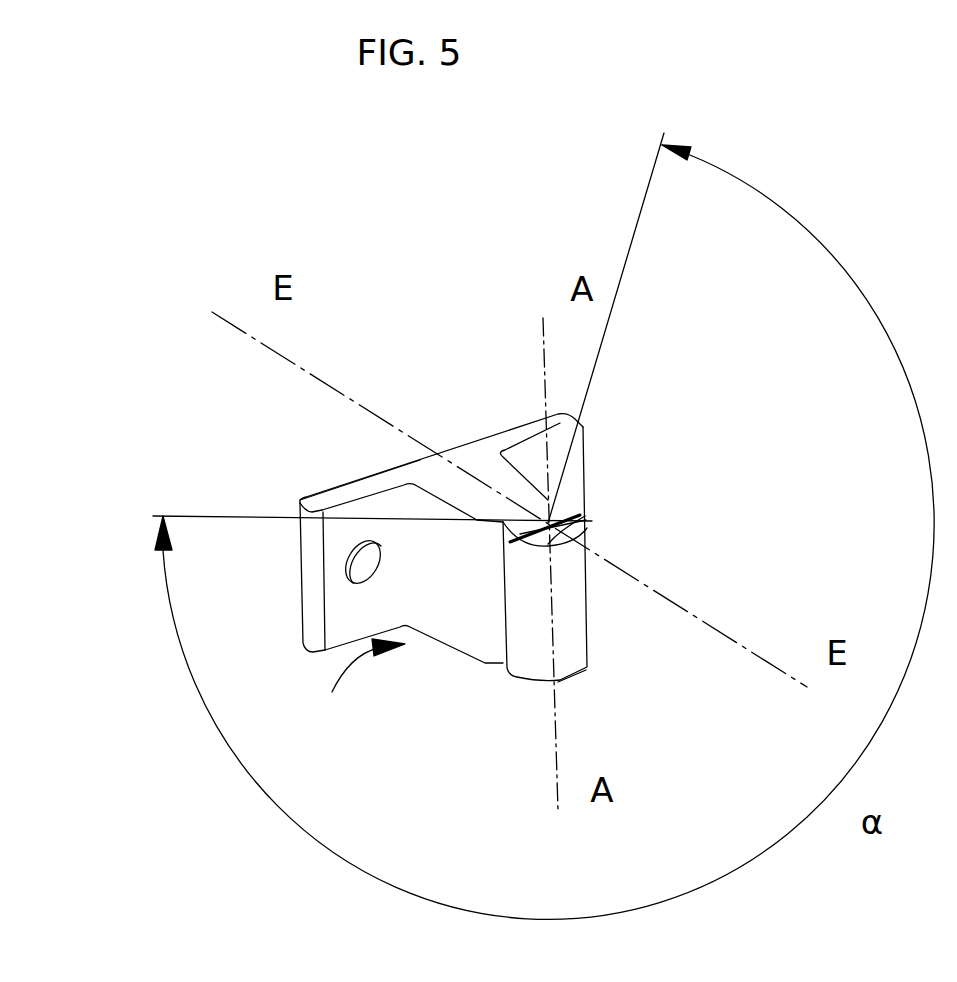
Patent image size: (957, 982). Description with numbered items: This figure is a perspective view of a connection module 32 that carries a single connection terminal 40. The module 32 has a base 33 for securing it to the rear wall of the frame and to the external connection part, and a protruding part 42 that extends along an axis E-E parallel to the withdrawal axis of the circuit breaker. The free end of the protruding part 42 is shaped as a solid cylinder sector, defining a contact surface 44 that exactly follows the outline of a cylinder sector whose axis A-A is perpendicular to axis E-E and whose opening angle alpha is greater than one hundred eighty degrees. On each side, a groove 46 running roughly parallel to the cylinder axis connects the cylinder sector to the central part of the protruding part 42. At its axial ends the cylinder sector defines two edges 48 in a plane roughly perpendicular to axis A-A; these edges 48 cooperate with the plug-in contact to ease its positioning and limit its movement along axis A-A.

The connection module 32 is at (502, 547).
The base 33 is at (358, 490).
The connection terminal 40 is at (351, 690).
The protruding part 42 is at (513, 487).
The contact surface 44 is at (547, 632).
The groove 46 is at (553, 510).
The edge 48 is at (586, 522).